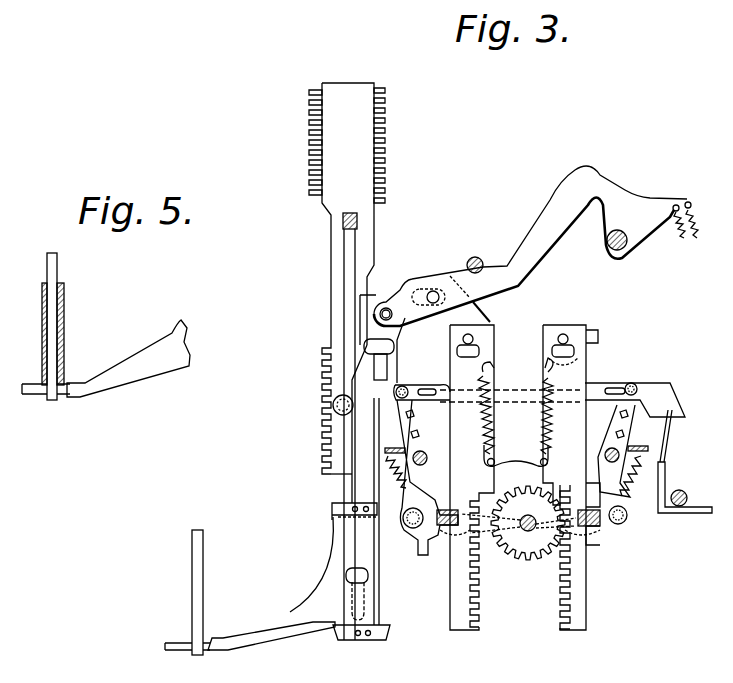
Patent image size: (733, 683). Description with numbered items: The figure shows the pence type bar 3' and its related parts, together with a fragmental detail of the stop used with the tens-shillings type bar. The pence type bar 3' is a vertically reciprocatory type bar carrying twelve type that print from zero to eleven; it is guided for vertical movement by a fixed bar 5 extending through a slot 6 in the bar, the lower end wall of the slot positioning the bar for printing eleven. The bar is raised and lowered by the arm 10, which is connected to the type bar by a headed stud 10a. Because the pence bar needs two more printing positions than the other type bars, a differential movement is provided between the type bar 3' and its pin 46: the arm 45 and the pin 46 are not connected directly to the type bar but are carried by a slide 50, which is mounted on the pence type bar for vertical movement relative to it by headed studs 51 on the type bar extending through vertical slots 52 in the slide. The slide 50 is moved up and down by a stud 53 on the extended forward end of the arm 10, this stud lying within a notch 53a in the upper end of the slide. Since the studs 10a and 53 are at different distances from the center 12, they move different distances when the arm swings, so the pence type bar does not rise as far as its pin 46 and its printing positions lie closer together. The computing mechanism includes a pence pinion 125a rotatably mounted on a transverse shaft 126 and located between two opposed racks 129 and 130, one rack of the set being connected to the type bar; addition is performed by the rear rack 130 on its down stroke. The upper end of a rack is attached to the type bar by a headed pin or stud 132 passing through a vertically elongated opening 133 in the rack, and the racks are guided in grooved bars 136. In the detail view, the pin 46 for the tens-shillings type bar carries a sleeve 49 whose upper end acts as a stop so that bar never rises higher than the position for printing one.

In FIG. 3, the pence type bar 3' is at (347, 280).
In FIG. 3, the fixed bar 5 is at (357, 222).
In FIG. 3, the slot 6 is at (357, 244).
In FIG. 3, the arm 10 is at (536, 238).
In FIG. 3, the headed stud 10a is at (437, 288).
In FIG. 3, the stud 53 is at (430, 291).
In FIG. 3, the notch 53a is at (386, 306).
In FIG. 3, the center 12 is at (610, 248).
In FIG. 3, the vertically elongated opening 133 is at (565, 340).
In FIG. 3, the headed pin or stud 132 is at (586, 352).
In FIG. 3, the headed stud 51 is at (368, 347).
In FIG. 3, the vertical slot 52 is at (378, 367).
In FIG. 3, the slide 50 is at (356, 432).
In FIG. 3, the grooved bar 136 is at (452, 540).
In FIG. 3, the transverse shaft 126 is at (528, 532).
In FIG. 3, the pence pinion 125a is at (544, 560).
In FIG. 3, the rack 129 is at (462, 630).
In FIG. 3, the rear rack 130 is at (590, 608).
In FIG. 3, the pin 46 is at (204, 585).
In FIG. 5, the pin 46 is at (56, 272).
In FIG. 5, the sleeve 49 is at (62, 314).
In FIG. 3, the arm 45 is at (283, 606).
In FIG. 5, the arm 45 is at (124, 362).